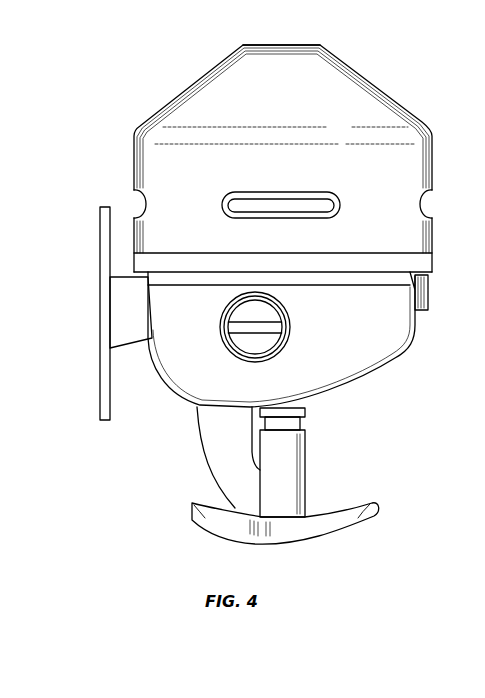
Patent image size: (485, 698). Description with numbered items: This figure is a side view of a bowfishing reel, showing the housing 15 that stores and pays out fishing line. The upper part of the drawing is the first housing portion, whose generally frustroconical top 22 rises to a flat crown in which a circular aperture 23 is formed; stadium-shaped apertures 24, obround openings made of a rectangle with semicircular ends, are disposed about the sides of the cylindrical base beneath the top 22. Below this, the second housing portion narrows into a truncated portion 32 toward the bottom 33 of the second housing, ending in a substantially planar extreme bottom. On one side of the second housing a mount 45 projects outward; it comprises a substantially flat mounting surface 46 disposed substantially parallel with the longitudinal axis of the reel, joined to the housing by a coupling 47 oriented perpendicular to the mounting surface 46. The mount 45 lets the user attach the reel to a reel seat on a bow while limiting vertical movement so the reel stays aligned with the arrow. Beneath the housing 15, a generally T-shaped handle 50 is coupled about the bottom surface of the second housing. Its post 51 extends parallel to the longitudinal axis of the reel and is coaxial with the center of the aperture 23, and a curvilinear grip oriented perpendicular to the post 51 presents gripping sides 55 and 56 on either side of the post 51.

The housing 15 is at (127, 72).
The frustroconical top 22 is at (355, 97).
The circular aperture 23 is at (272, 46).
The stadium-shaped apertures 24 is at (428, 204).
The truncated portion 32 is at (358, 362).
The bottom 33 is at (210, 408).
The mount 45 is at (98, 300).
The flat mounting surface 46 is at (100, 228).
The coupling 47 is at (124, 318).
The handle 50 is at (292, 552).
The post 51 is at (292, 480).
The gripping side 55 is at (210, 520).
The gripping side 56 is at (358, 518).